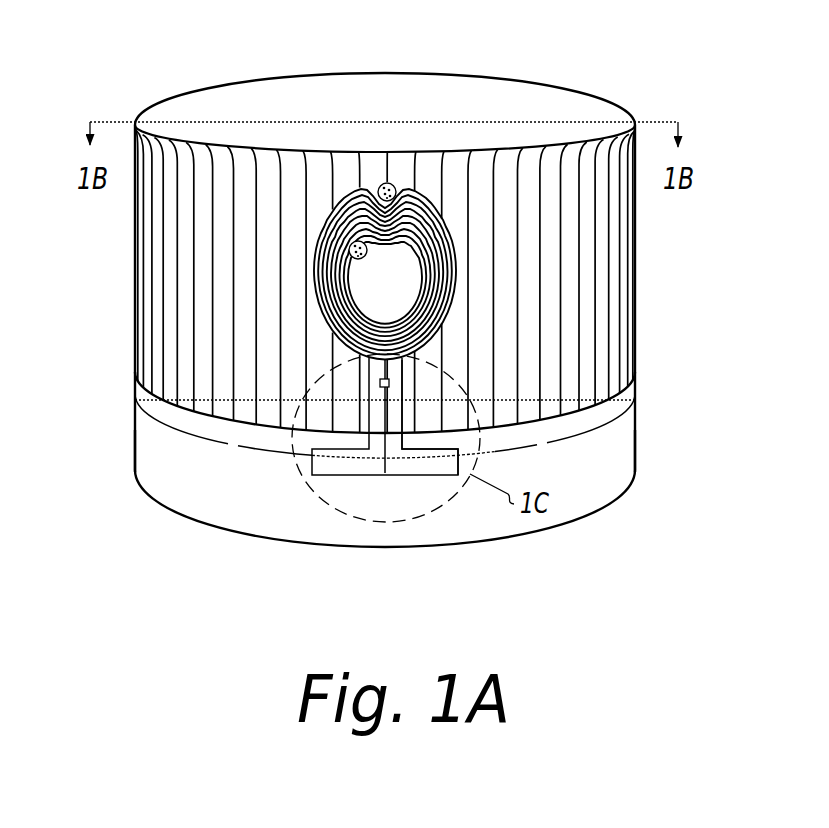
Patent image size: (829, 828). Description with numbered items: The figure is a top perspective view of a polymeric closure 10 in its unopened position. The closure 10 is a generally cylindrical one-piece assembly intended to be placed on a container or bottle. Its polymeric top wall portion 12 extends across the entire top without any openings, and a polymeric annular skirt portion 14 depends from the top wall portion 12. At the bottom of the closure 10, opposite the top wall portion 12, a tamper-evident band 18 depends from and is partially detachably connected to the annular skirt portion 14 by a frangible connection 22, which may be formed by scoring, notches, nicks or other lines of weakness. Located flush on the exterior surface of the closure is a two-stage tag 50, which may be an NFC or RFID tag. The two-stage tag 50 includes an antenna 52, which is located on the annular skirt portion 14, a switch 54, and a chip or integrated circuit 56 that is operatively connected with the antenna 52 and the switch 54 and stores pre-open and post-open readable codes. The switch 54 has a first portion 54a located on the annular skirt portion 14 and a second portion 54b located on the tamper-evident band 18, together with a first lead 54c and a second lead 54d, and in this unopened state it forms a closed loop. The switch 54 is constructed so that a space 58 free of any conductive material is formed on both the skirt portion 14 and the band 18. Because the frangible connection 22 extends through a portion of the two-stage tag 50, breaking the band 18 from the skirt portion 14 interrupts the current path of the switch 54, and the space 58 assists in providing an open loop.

The polymeric closure 10 is at (176, 74).
The polymeric top wall portion 12 is at (262, 79).
The polymeric annular skirt portion 14 is at (648, 292).
The tamper-evident band 18 is at (646, 477).
The frangible connection 22 is at (152, 418).
The 2-stage tag 50 is at (302, 266).
The antenna 52 is at (386, 170).
The switch 54 is at (304, 473).
The first portion 54a is at (635, 448).
The second portion 54b is at (449, 470).
The first lead 54c is at (135, 399).
The second lead 54d is at (635, 402).
The chip or integrated circuit 56 is at (391, 381).
The space 58 is at (385, 463).